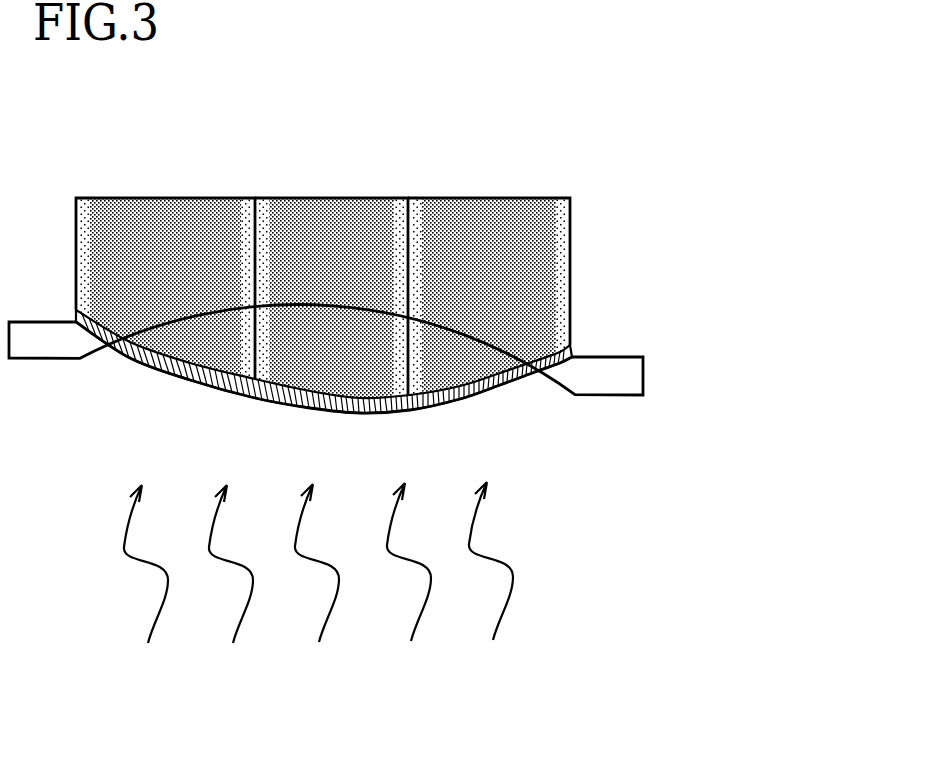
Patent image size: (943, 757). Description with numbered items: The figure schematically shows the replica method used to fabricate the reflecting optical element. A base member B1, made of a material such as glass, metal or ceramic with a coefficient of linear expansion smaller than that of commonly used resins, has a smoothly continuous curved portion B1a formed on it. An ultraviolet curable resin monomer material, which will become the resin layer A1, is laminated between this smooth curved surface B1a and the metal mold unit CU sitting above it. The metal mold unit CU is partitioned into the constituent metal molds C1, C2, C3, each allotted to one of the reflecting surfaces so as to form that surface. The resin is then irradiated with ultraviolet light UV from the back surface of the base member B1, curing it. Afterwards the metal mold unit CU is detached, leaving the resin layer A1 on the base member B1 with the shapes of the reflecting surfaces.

The resin layer A1 is at (153, 360).
The base member B1 is at (527, 403).
The smoothly continuous curved portion B1a is at (488, 395).
The constituent metal mold C1 is at (178, 212).
The constituent metal mold C2 is at (333, 207).
The constituent metal mold C3 is at (489, 272).
The metal mold unit CU is at (345, 234).
The ultraviolet light UV is at (428, 623).